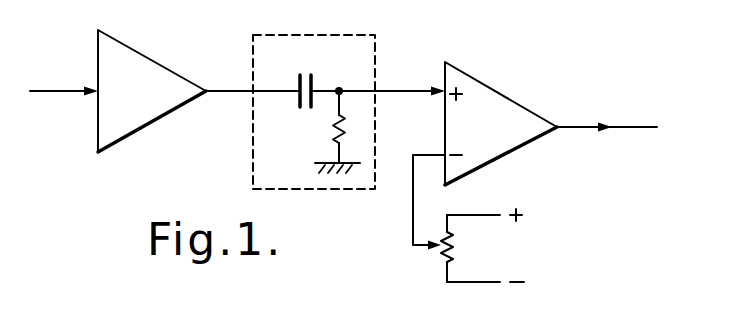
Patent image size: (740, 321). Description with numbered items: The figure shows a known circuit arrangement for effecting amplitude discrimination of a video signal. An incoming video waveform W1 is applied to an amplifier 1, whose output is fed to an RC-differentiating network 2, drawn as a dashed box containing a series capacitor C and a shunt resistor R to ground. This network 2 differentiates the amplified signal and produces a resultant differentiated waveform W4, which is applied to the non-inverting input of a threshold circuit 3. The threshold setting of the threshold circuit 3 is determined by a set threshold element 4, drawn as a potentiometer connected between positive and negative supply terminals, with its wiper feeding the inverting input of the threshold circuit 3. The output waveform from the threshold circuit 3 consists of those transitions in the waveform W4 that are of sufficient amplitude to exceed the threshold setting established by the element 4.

The amplifier 1 is at (150, 54).
The RC-differentiating network 2 is at (312, 34).
The threshold circuit 3 is at (496, 88).
The set threshold element 4 is at (468, 231).
The incoming video waveform W1 is at (47, 86).
The differentiated waveform W4 is at (394, 89).
The capacitor C is at (300, 72).
The resistor R is at (332, 124).